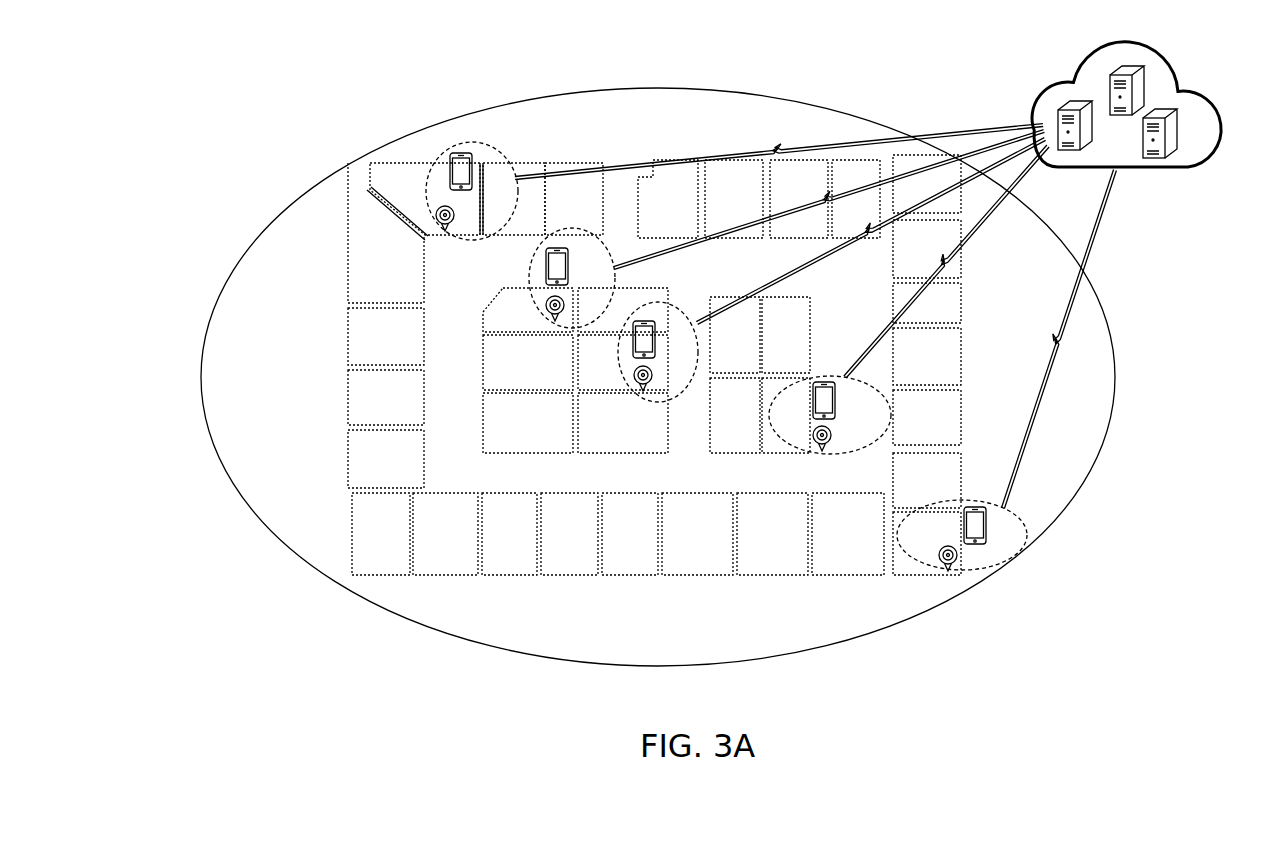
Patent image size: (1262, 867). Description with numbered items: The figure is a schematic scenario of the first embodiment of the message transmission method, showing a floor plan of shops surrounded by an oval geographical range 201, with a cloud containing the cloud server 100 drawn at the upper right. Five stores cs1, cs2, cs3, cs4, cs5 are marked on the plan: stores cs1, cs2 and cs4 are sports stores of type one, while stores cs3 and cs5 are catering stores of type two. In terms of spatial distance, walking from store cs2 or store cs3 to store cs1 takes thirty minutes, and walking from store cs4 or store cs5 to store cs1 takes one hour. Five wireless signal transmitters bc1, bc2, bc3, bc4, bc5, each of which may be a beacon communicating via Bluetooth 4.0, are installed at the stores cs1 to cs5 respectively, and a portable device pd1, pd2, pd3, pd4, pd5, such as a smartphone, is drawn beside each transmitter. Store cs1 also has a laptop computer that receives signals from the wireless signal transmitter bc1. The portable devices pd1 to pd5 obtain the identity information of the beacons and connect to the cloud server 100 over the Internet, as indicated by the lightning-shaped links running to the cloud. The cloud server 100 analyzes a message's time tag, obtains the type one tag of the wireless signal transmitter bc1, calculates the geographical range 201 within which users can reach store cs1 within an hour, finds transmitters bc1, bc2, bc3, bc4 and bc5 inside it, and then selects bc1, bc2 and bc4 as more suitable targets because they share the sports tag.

The cloud server 100 is at (1172, 62).
The geographical range 201 is at (218, 297).
The store cs1 is at (641, 352).
The store cs2 is at (556, 278).
The store cs3 is at (830, 415).
The store cs4 is at (453, 191).
The store cs5 is at (962, 535).
The portable device pd1 is at (662, 340).
The portable device pd2 is at (576, 268).
The portable device pd3 is at (843, 403).
The portable device pd4 is at (480, 173).
The portable device pd5 is at (994, 526).
The wireless signal transmitter bc1 is at (662, 377).
The wireless signal transmitter bc2 is at (574, 308).
The wireless signal transmitter bc3 is at (841, 438).
The wireless signal transmitter bc4 is at (464, 218).
The wireless signal transmitter bc5 is at (968, 559).